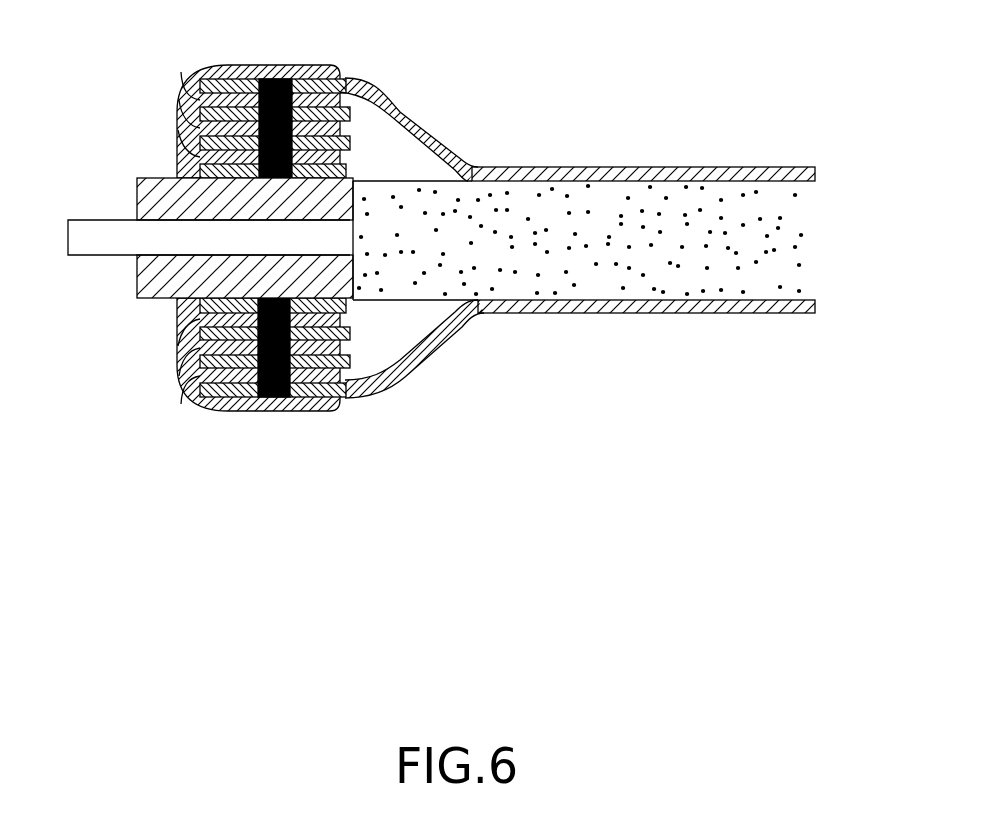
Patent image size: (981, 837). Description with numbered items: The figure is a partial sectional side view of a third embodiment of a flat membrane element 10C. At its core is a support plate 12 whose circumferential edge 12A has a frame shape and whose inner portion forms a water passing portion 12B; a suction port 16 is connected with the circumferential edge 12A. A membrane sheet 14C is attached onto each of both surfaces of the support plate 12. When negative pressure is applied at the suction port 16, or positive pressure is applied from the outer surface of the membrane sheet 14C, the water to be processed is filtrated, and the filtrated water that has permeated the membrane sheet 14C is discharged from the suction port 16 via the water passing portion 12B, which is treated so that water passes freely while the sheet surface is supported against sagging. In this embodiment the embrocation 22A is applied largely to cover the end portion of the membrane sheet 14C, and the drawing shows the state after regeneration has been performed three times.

The flat membrane element 10C is at (478, 225).
The support plate 12 is at (643, 257).
The circumferential edge 12A is at (153, 193).
The water passing portion 12B is at (642, 285).
The membrane sheet 14C is at (432, 142).
The suction port 16 is at (92, 228).
The embrocation 22A is at (185, 302).